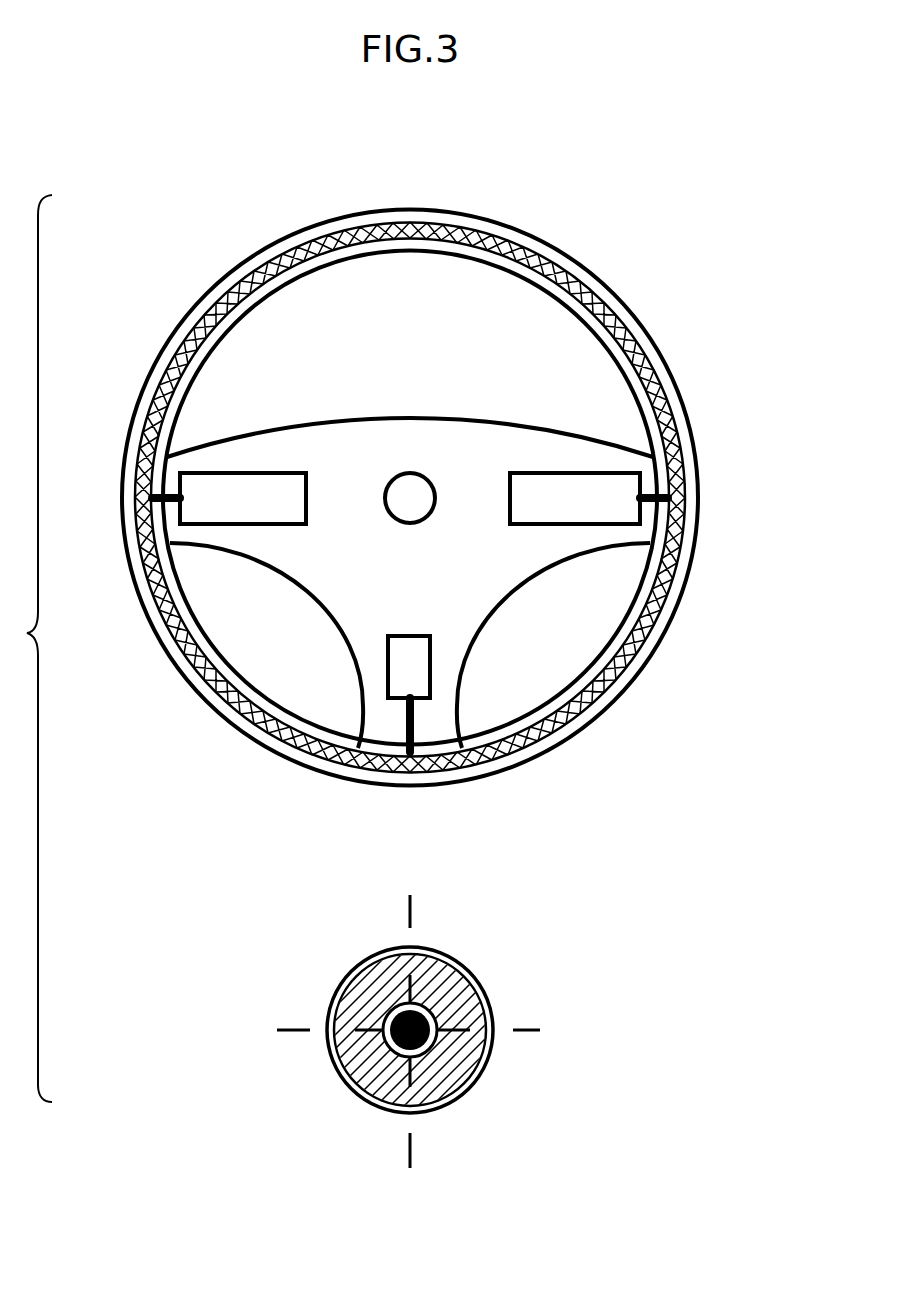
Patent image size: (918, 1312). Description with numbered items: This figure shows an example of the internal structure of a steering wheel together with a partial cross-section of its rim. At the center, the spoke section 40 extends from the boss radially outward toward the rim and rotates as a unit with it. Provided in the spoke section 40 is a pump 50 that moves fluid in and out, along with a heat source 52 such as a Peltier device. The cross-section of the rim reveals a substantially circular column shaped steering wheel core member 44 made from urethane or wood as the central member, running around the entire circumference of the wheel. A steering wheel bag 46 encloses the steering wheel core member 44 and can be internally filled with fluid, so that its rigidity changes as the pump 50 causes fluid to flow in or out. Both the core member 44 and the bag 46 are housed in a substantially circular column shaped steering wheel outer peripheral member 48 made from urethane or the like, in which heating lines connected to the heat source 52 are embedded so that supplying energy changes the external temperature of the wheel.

The spoke section 40 is at (227, 440).
The steering wheel core member 44 is at (430, 1036).
The steering wheel bag 46 is at (347, 995).
The steering wheel outer peripheral member 48 is at (458, 958).
The pump 50 is at (526, 472).
The heat source 52 is at (408, 634).